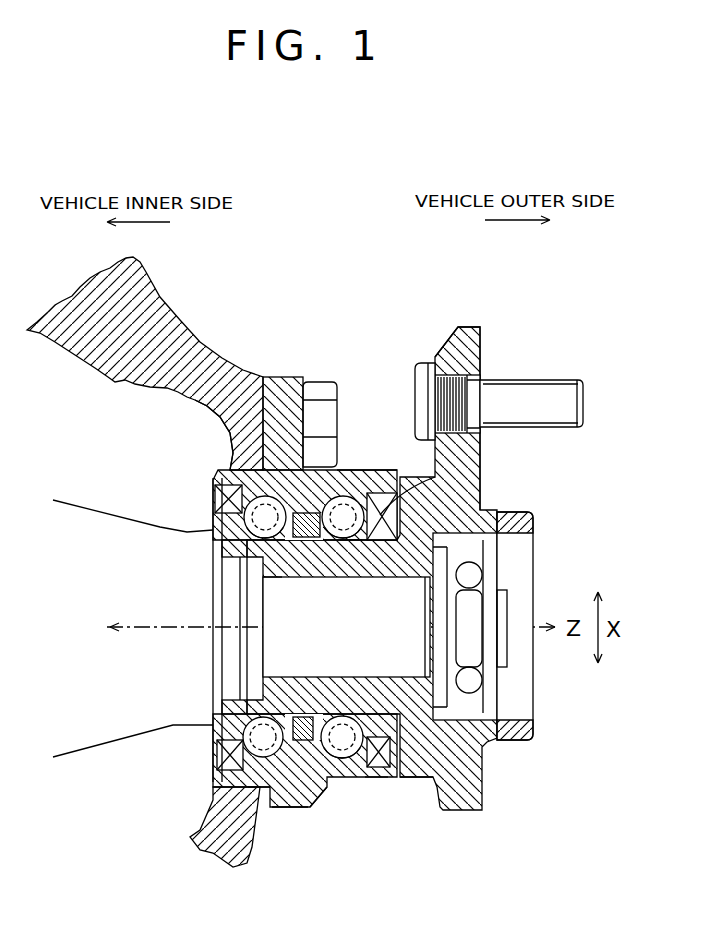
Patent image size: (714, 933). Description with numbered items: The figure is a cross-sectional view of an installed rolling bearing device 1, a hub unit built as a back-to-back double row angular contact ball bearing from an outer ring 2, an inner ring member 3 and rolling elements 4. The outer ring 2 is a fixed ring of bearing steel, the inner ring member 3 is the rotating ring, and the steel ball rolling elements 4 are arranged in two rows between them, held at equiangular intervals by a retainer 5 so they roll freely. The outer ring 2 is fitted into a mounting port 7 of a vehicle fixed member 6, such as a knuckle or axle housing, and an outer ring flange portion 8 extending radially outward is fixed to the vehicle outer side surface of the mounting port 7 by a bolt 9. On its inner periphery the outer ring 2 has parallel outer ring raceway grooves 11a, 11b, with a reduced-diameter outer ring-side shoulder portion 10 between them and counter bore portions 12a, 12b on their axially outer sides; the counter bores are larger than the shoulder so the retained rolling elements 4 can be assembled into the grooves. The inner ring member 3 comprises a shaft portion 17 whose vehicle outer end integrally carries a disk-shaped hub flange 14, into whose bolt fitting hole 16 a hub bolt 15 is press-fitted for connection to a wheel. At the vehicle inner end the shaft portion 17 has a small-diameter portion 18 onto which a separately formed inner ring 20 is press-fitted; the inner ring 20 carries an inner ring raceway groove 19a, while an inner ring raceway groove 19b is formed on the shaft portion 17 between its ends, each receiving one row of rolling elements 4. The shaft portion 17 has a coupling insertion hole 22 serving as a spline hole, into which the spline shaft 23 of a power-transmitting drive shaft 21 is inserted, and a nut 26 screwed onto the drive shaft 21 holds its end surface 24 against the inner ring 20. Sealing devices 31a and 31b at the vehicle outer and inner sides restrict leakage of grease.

The rolling bearing device 1 is at (378, 312).
The outer ring 2 is at (355, 468).
The inner ring member 3 is at (407, 554).
The rolling elements 4 is at (303, 627).
The retainer 5 is at (330, 788).
The vehicle fixed member 6 is at (182, 323).
The mounting port 7 is at (313, 468).
The outer ring flange portion 8 is at (293, 376).
The bolt 9 is at (325, 382).
The outer ring-side shoulder portion 10 is at (407, 757).
The outer ring raceway groove 11a is at (287, 810).
The outer ring raceway groove 11b is at (343, 758).
The counter bore portion 12a is at (260, 826).
The counter bore portion 12b is at (373, 780).
The hub flange 14 is at (480, 334).
The hub bolt 15 is at (420, 363).
The bolt fitting hole 16 is at (444, 342).
The shaft portion 17 is at (340, 625).
The small-diameter portion 18 is at (272, 580).
The inner ring raceway groove 19a is at (265, 538).
The inner ring raceway groove 19b is at (350, 538).
The inner ring 20 is at (213, 557).
The drive shaft 21 is at (83, 740).
The coupling insertion hole 22 is at (352, 560).
The spline shaft 23 is at (240, 647).
The end surface 24 is at (213, 727).
The nut 26 is at (473, 607).
The sealing device 31a is at (228, 466).
The sealing device 31b is at (433, 513).